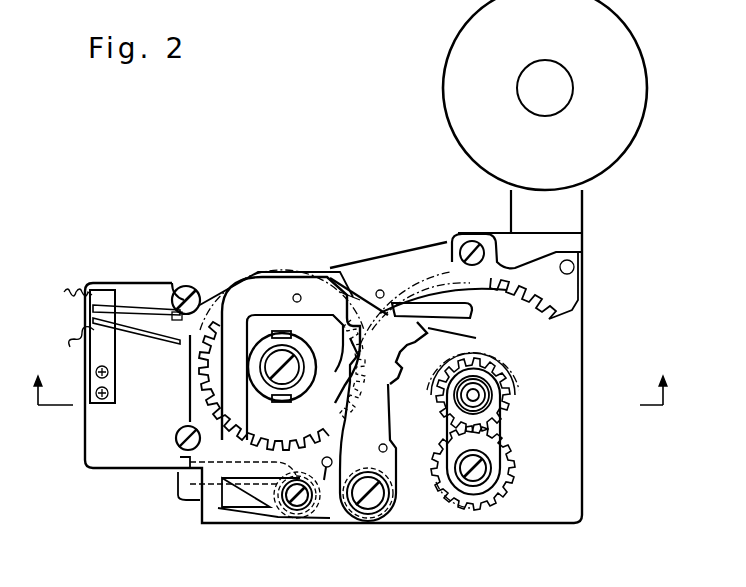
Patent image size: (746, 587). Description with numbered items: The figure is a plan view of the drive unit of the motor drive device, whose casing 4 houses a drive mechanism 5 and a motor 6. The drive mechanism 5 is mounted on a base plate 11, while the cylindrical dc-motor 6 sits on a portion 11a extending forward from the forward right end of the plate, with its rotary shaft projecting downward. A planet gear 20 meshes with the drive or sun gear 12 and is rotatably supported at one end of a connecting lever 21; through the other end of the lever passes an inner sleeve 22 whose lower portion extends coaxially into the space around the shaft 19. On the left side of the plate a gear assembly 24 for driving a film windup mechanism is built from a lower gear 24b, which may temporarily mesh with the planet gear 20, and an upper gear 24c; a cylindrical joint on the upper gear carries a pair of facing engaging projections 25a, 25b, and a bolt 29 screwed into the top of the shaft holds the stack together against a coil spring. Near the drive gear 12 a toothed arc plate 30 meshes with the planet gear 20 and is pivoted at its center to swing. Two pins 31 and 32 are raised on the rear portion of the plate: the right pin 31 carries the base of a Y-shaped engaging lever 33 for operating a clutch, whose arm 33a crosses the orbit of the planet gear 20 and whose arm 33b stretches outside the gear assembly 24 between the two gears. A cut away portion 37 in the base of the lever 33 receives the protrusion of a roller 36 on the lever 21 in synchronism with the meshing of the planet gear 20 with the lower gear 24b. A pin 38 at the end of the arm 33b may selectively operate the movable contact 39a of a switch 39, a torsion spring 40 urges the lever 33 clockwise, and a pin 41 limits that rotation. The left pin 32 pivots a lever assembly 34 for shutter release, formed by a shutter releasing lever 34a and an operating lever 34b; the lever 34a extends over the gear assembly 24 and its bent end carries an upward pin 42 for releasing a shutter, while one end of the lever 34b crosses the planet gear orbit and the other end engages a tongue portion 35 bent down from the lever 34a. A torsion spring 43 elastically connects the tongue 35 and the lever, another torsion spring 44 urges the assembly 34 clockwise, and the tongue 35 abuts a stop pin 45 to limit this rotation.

The casing 4 is at (356, 372).
The drive mechanism 5 is at (431, 228).
The motor 6 is at (640, 133).
The base plate 11 is at (584, 506).
The portion forwardly extending from the plate 11a is at (584, 234).
The drive gear 12 is at (505, 440).
The shaft 19 is at (488, 396).
The planet gear 20 is at (497, 497).
The connecting lever 21 is at (515, 458).
The inner sleeve 22 is at (500, 389).
The gear assembly 24 is at (214, 406).
The lower gear 24b is at (365, 300).
The upper gear 24c is at (200, 355).
The engaging projection 25a is at (279, 330).
The engaging projection 25b is at (276, 402).
The bolt 29 is at (292, 372).
The toothed arc plate 30 is at (560, 251).
The pin 31 is at (380, 515).
The pin 32 is at (303, 507).
The engaging lever 33 is at (407, 463).
The arm 33a is at (447, 300).
The arm 33b is at (252, 277).
The lever assembly 34 is at (368, 282).
The shutter releasing lever 34a is at (230, 385).
The operating lever 34b is at (498, 330).
The tongue portion 35 is at (180, 460).
The roller 36 is at (473, 488).
The cut away portion 37 is at (458, 392).
The pin 38 is at (177, 285).
The switch 39 is at (102, 300).
The movable contact 39a is at (139, 305).
The torsion spring 40 is at (338, 506).
The pin 41 is at (229, 293).
The pin for releasing a shutter 42 is at (331, 296).
The torsion spring 43 is at (241, 510).
The torsion spring 44 is at (326, 480).
The stop pin 45 is at (178, 440).